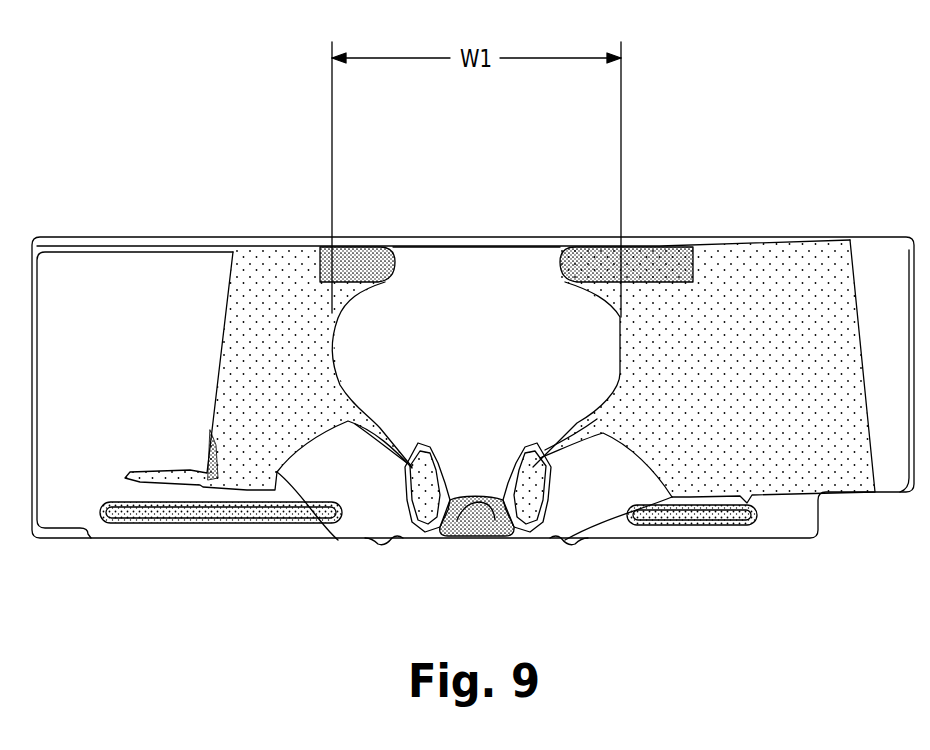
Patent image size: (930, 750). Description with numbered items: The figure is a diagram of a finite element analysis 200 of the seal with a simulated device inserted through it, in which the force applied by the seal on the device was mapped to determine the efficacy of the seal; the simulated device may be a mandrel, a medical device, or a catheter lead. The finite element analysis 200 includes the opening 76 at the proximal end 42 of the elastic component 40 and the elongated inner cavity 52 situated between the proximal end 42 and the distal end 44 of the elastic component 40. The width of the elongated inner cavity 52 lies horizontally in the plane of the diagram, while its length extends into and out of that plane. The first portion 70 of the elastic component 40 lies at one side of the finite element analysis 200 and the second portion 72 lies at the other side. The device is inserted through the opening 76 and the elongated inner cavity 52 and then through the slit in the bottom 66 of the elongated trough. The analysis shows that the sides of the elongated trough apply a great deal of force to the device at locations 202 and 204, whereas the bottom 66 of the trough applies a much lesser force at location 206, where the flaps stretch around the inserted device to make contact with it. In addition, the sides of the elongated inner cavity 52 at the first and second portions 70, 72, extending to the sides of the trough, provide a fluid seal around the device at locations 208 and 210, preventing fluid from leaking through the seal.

The finite element analysis 200 is at (739, 93).
The elastic component 40 is at (838, 250).
The proximal end 42 is at (240, 236).
The distal end 44 is at (244, 492).
The elongated inner cavity 52 is at (419, 285).
The bottom of the elongated trough 66 is at (496, 540).
The first portion 70 is at (656, 250).
The second portion 72 is at (278, 250).
The opening 76 is at (551, 248).
The high force location 202 is at (418, 540).
The high force location 204 is at (535, 540).
The lesser force location 206 is at (456, 540).
The fluid seal location 208 is at (368, 430).
The fluid seal location 210 is at (598, 412).